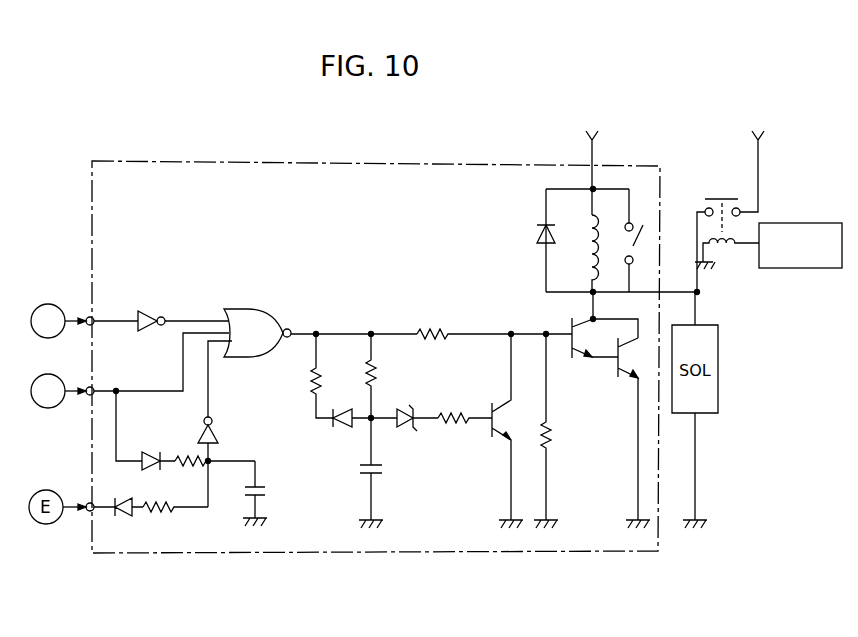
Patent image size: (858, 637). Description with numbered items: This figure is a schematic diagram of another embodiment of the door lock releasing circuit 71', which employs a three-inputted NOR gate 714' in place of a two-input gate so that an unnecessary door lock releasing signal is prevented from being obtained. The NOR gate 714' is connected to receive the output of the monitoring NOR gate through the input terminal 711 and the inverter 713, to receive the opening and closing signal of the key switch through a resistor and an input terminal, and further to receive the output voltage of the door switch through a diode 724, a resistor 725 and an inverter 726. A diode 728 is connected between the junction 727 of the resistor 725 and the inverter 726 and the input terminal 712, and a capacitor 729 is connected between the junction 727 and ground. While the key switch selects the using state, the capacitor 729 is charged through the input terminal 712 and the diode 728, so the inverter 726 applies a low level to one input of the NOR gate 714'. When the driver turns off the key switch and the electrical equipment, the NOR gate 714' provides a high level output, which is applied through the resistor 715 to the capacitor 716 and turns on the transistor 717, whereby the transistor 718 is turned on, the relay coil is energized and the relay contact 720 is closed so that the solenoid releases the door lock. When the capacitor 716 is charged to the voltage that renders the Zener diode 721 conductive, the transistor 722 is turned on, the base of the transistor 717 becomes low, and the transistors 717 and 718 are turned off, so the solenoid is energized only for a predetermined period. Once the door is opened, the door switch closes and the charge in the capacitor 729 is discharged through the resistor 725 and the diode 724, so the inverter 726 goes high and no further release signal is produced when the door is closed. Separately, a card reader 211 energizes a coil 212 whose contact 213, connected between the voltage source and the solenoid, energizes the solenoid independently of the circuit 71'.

The door lock releasing circuit 71' is at (376, 322).
The input terminal 711 is at (93, 316).
The input terminal 712 is at (93, 387).
The inverter 713 is at (152, 309).
The three-inputted NOR gate 714' is at (320, 315).
The resistor 715 is at (375, 384).
The capacitor 716 is at (382, 470).
The transistor 717 is at (588, 262).
The transistor 718 is at (615, 370).
The relay contact 720 is at (633, 246).
The Zener diode 721 is at (406, 432).
The transistor 722 is at (490, 405).
The diode 724 is at (122, 520).
The resistor 725 is at (166, 515).
The inverter 726 is at (212, 421).
The junction 727 is at (211, 465).
The diode 728 is at (150, 452).
The capacitor 729 is at (268, 490).
The card reader 211 is at (802, 270).
The coil 212 is at (727, 248).
The contact 213 is at (719, 196).